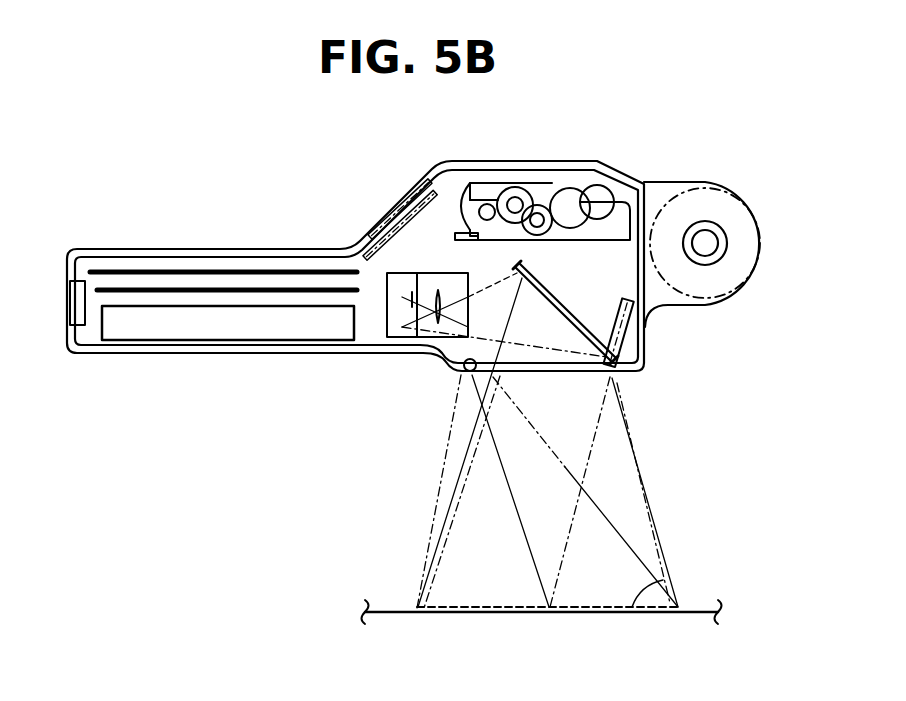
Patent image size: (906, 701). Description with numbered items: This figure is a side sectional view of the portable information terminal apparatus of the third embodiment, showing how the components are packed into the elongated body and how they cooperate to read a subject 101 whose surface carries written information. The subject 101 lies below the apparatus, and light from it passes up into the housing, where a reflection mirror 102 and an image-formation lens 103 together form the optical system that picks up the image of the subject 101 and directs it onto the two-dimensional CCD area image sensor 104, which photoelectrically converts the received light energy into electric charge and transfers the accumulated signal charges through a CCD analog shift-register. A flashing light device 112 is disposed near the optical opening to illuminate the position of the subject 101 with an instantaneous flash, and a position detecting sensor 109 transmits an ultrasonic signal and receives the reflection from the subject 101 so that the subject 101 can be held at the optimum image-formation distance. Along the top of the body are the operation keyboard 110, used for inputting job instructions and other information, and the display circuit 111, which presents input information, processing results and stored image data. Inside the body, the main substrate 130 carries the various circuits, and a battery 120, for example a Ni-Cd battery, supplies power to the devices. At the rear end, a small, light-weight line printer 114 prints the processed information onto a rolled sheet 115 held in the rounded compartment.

The subject 101 is at (643, 583).
The reflection mirror 102 is at (553, 293).
The image-formation lens 103 is at (438, 290).
The two-dimensional CCD area image sensor 104 is at (362, 356).
The position detecting sensor 109 is at (650, 348).
The operation keyboard 110 is at (173, 250).
The display circuit 111 is at (368, 228).
The flashing light device 112 is at (450, 371).
The line printer 114 is at (495, 183).
The rolled sheet 115 is at (705, 192).
The battery 120 is at (172, 330).
The main substrate 130 is at (117, 287).